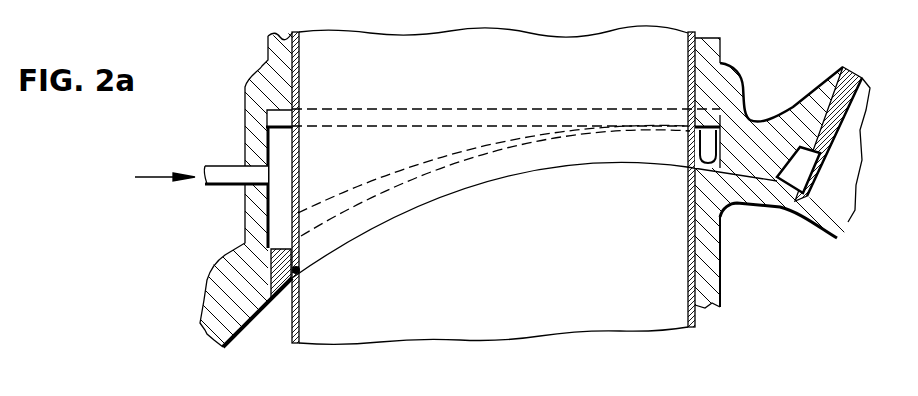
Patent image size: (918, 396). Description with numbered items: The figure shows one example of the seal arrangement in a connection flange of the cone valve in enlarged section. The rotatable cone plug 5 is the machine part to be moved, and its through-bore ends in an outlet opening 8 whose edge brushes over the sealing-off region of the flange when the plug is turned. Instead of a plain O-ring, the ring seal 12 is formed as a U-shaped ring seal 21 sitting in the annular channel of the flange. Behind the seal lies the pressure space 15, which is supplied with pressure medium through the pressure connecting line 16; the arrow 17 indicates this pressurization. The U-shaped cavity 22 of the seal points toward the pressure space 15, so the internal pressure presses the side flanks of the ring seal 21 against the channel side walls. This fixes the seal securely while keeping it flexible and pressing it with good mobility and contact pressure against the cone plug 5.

The cone plug 5 is at (252, 318).
The outlet opening 8 is at (415, 205).
The ring seal 12 is at (300, 270).
The U-shaped ring seal 21 is at (345, 300).
The pressure space 15 is at (283, 205).
The pressure connecting line 16 is at (228, 172).
The arrow 17 is at (155, 173).
The U-shaped cavity 22 is at (280, 258).